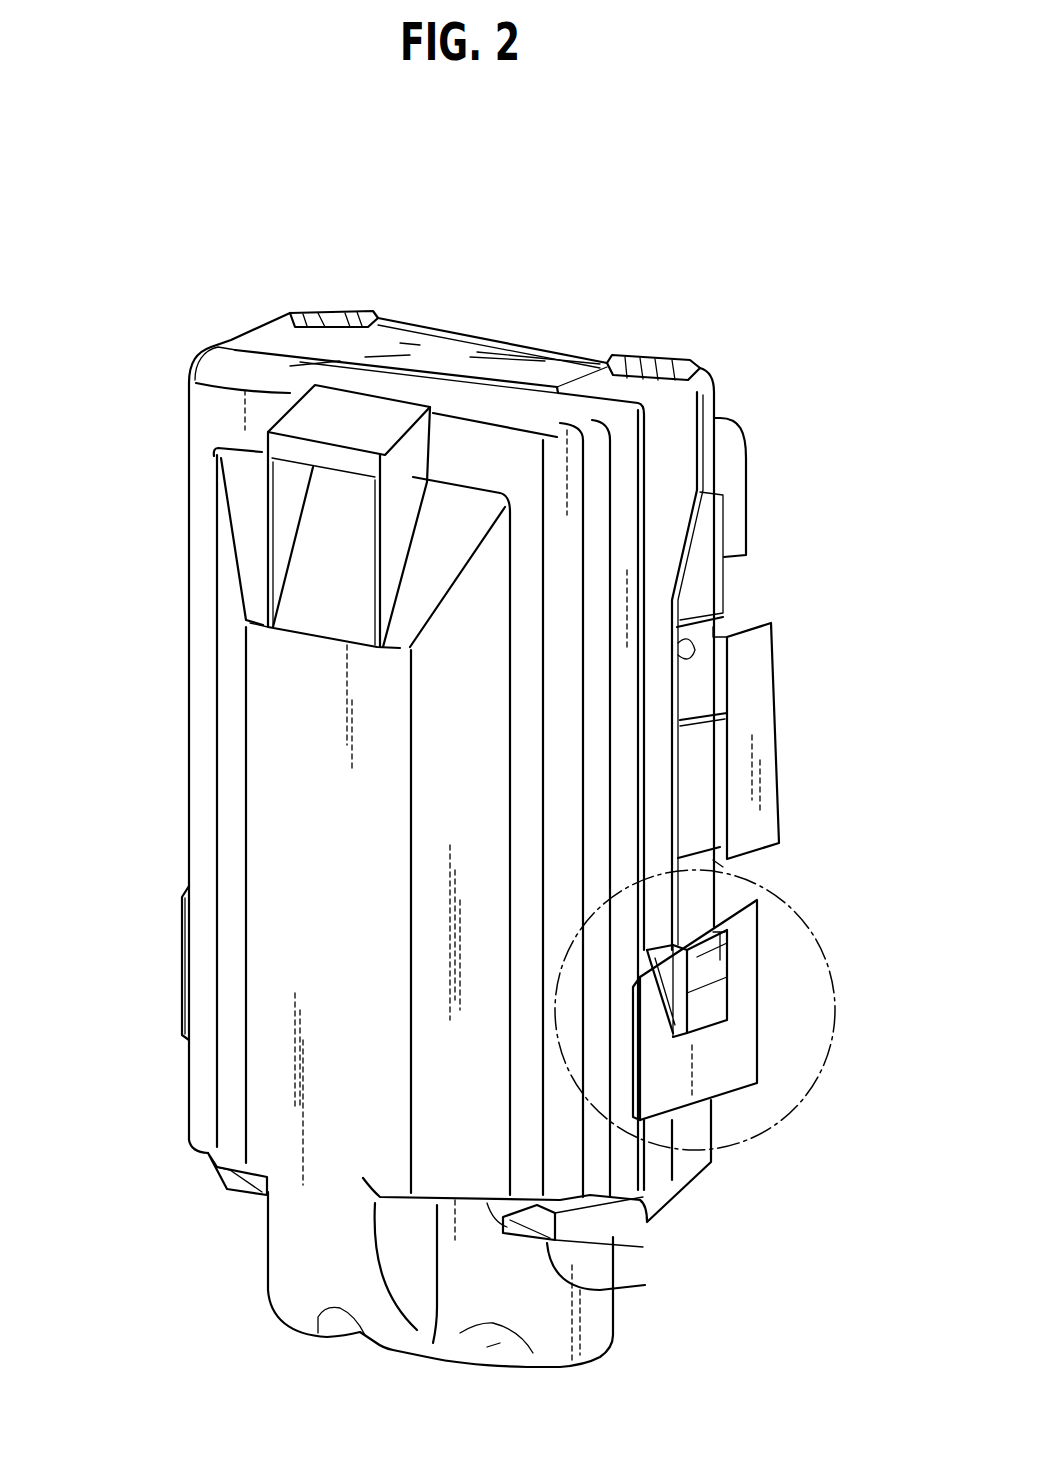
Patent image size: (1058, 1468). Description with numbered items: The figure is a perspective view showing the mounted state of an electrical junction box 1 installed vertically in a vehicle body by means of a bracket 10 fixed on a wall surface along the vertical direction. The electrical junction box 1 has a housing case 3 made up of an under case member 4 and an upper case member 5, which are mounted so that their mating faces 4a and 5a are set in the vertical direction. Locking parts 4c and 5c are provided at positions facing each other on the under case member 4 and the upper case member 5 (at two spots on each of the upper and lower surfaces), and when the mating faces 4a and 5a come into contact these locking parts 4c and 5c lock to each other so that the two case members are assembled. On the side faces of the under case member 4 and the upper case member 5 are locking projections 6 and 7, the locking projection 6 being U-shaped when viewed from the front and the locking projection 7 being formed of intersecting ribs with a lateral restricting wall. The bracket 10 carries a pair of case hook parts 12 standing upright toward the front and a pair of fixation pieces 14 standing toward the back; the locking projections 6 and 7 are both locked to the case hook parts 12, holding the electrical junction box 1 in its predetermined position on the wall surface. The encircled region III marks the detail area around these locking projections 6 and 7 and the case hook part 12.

The electrical junction box 1 is at (497, 270).
The housing case 3 is at (70, 381).
The under case member 4 is at (335, 341).
The upper case member 5 is at (205, 497).
The mating face 4a is at (705, 660).
The locking part 4c is at (330, 312).
The mating face 5a is at (677, 658).
The locking part 5c is at (318, 312).
The locking projection 6 is at (712, 1003).
The locking projection 7 is at (720, 967).
The bracket 10 is at (800, 731).
The case hook part 12 is at (733, 1058).
The fixation piece 14 is at (771, 794).
The enlarged region III is at (803, 1093).